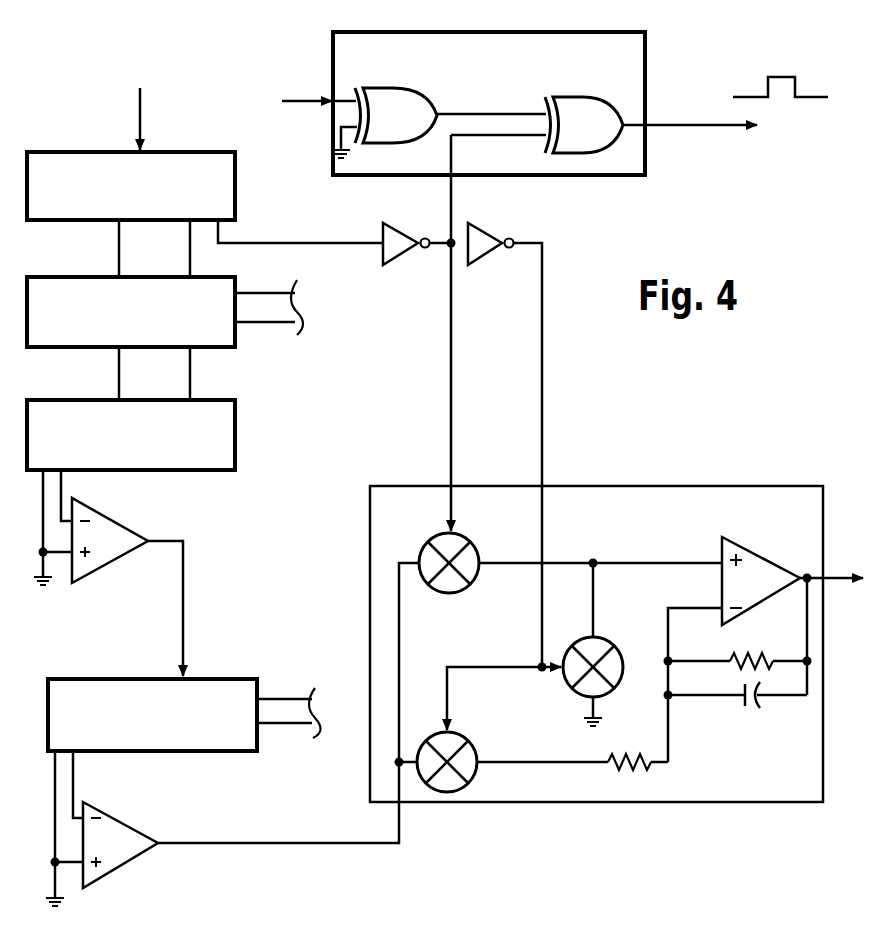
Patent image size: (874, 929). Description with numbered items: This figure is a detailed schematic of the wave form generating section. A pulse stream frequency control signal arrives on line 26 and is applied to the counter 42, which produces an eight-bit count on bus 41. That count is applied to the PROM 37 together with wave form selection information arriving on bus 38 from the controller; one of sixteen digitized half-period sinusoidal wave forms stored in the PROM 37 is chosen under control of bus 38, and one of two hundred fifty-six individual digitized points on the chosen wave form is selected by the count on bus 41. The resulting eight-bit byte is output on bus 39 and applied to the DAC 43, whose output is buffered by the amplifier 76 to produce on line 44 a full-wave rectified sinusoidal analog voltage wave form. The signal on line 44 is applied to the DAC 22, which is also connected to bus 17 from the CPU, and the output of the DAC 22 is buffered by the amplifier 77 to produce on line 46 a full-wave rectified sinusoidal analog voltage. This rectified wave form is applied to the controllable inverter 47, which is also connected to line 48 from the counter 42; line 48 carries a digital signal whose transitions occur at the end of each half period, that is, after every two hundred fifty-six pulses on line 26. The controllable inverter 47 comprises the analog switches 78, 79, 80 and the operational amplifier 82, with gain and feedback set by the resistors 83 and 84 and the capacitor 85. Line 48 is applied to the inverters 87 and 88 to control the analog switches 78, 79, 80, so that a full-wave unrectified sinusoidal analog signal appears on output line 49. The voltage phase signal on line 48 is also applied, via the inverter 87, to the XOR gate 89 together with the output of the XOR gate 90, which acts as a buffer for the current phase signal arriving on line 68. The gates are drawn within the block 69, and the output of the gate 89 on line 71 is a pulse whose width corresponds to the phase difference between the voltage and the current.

The bus 17 is at (293, 713).
The DAC 22 is at (215, 702).
The line 26 is at (142, 110).
The PROM 37 is at (107, 332).
The bus 38 is at (258, 310).
The bus 39 is at (168, 382).
The bus 41 is at (130, 235).
The counter 42 is at (213, 177).
The DAC 43 is at (198, 440).
The line 44 is at (186, 598).
The line 46 is at (253, 845).
The controllable inverter 47 is at (655, 537).
The line 48 is at (355, 246).
The line 49 is at (833, 583).
The line 68 is at (303, 98).
The exclusive-OR logic circuit 69 is at (517, 78).
The output line 71 is at (700, 93).
The amplifier 76 is at (115, 546).
The amplifier 77 is at (125, 837).
The analog switch 78 is at (468, 555).
The analog switch 79 is at (462, 760).
The analog switch 80 is at (600, 648).
The operational amplifier 82 is at (776, 520).
The resistor 83 is at (643, 757).
The resistor 84 is at (748, 656).
The capacitor 85 is at (747, 702).
The inverter 87 is at (402, 247).
The inverter 88 is at (484, 250).
The XOR gate 89 is at (592, 110).
The XOR gate 90 is at (388, 107).